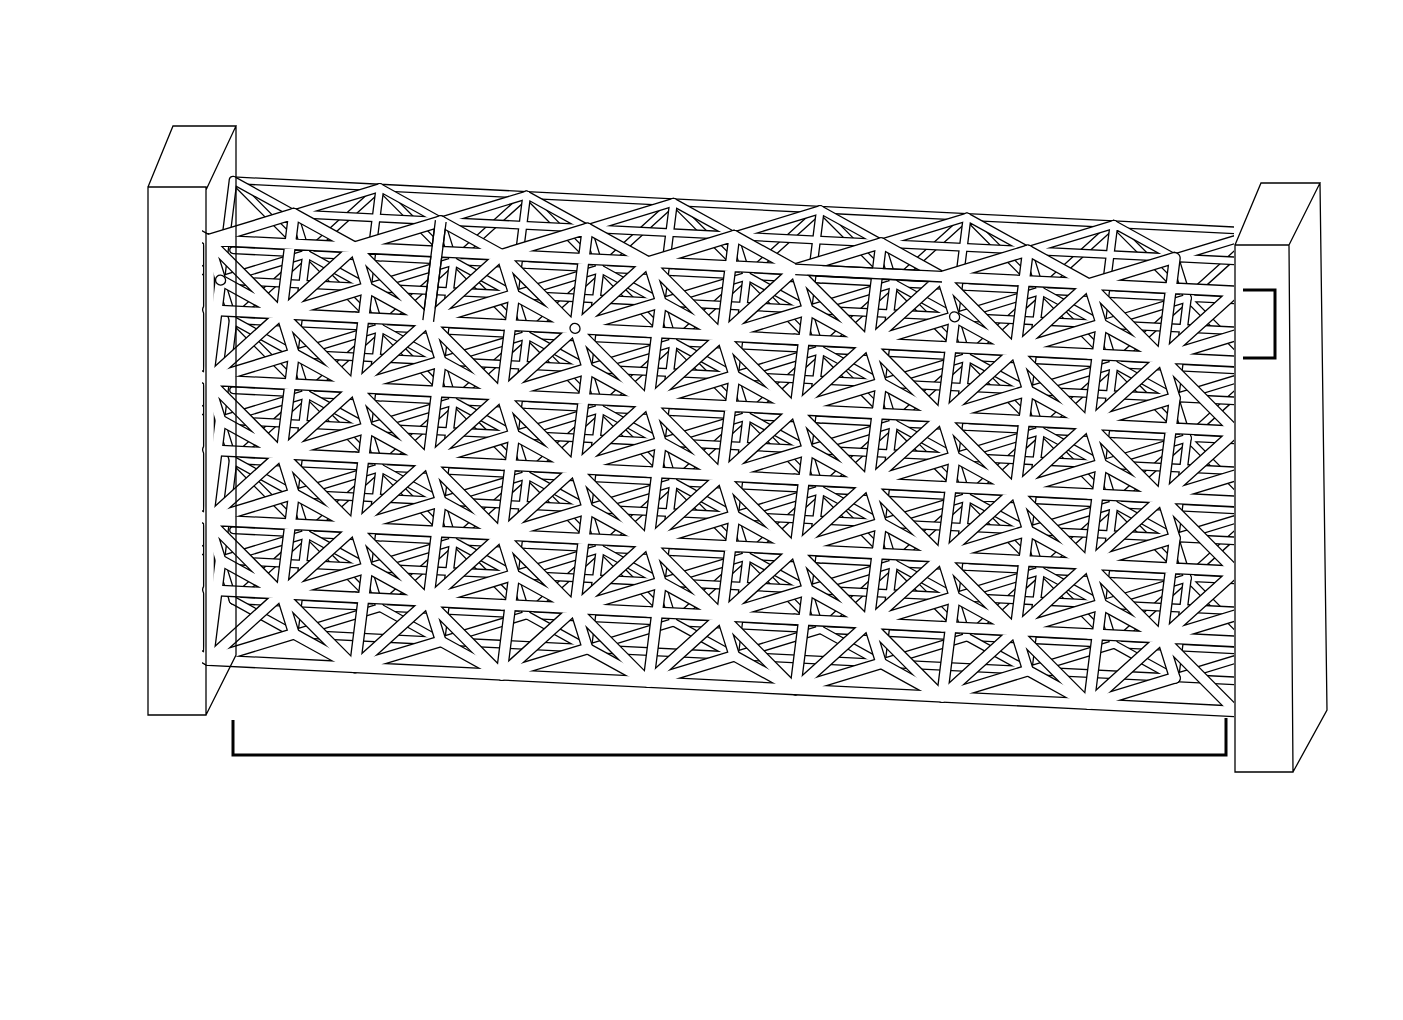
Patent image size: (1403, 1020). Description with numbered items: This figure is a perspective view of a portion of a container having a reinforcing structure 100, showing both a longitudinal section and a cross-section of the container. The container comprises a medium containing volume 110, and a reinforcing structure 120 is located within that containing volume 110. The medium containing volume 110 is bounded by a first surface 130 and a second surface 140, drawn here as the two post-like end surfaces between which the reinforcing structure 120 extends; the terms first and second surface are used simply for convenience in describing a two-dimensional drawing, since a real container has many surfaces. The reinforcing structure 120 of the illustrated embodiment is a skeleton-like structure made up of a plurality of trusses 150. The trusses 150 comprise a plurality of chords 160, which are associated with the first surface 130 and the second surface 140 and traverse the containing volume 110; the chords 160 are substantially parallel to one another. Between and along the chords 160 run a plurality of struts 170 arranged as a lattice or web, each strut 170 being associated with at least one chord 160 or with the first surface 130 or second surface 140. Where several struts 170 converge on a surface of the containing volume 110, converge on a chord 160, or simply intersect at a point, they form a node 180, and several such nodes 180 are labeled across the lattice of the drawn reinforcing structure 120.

The container having a reinforcing structure 100 is at (115, 138).
The medium containing volume 110 is at (738, 222).
The reinforcing structure 120 is at (738, 755).
The first surface 130 is at (228, 164).
The second surface 140 is at (1243, 214).
The plurality of trusses 150 is at (1277, 331).
The chords 160 is at (874, 266).
The struts 170 is at (437, 267).
The node 180 is at (218, 287).